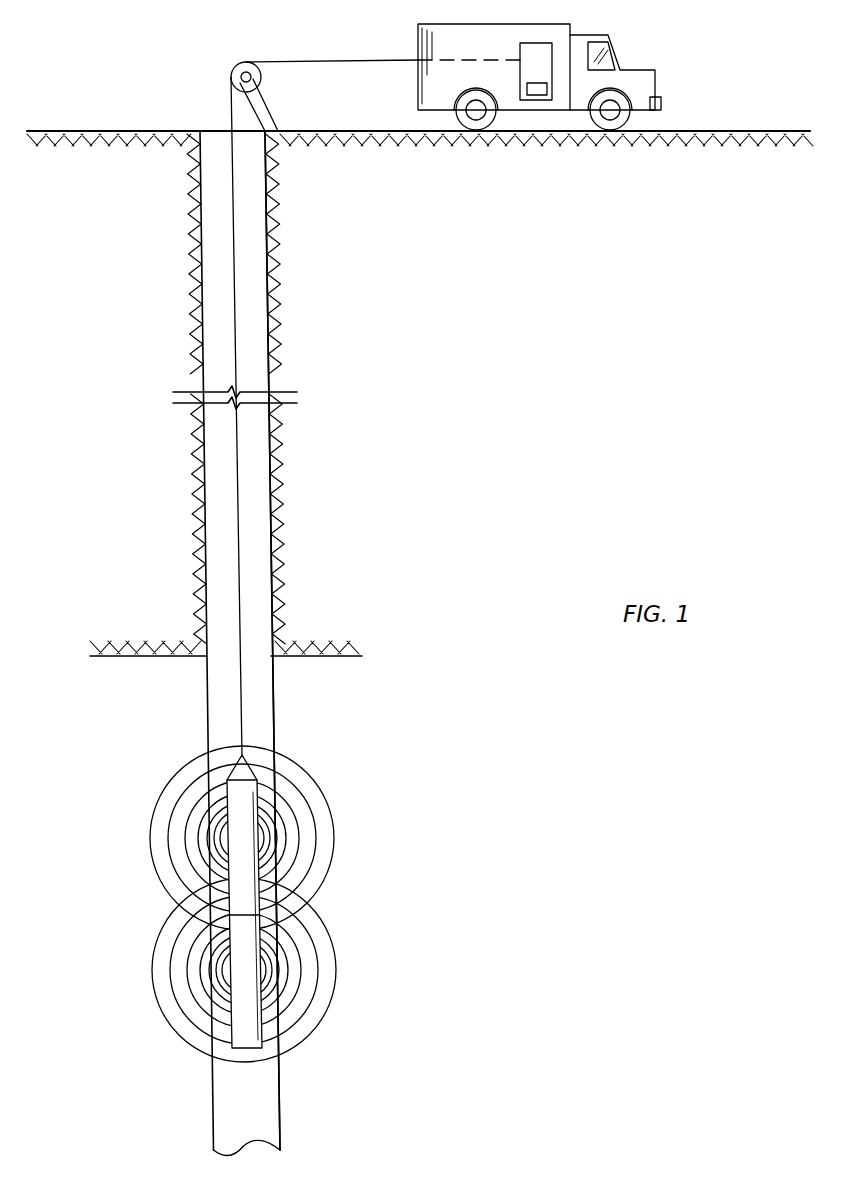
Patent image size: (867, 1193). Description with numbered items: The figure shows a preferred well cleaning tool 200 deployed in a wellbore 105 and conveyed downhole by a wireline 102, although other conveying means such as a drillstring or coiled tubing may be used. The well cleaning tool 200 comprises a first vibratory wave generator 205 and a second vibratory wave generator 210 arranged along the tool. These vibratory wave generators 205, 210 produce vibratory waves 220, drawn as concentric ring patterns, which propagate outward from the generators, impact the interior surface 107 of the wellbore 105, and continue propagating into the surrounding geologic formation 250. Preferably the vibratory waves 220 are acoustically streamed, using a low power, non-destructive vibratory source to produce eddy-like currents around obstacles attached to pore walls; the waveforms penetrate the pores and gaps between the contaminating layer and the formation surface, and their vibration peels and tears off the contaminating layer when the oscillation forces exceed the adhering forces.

The wireline 102 is at (234, 282).
The wellbore 105 is at (220, 487).
The interior surface of wellbore 107 is at (272, 705).
The well cleaning tool 200 is at (242, 908).
The first vibratory wave generator 205 is at (197, 1048).
The second vibratory wave generator 210 is at (262, 780).
The vibratory waves 220 is at (168, 928).
The geologic formation 250 is at (78, 815).